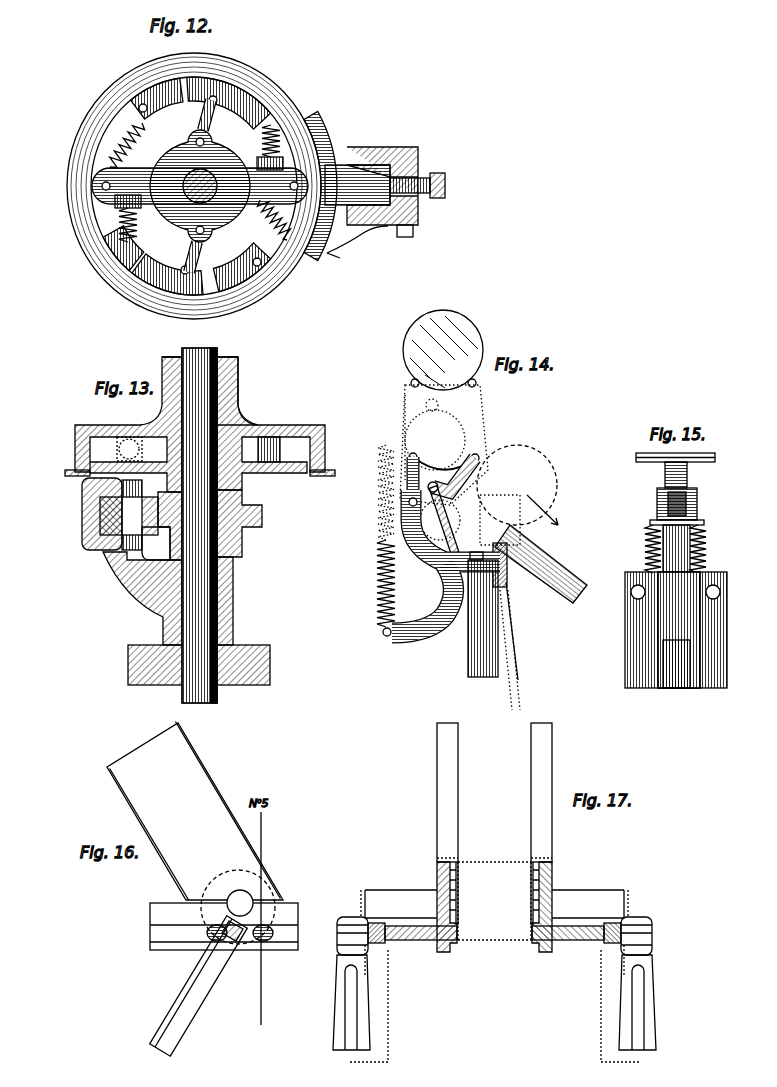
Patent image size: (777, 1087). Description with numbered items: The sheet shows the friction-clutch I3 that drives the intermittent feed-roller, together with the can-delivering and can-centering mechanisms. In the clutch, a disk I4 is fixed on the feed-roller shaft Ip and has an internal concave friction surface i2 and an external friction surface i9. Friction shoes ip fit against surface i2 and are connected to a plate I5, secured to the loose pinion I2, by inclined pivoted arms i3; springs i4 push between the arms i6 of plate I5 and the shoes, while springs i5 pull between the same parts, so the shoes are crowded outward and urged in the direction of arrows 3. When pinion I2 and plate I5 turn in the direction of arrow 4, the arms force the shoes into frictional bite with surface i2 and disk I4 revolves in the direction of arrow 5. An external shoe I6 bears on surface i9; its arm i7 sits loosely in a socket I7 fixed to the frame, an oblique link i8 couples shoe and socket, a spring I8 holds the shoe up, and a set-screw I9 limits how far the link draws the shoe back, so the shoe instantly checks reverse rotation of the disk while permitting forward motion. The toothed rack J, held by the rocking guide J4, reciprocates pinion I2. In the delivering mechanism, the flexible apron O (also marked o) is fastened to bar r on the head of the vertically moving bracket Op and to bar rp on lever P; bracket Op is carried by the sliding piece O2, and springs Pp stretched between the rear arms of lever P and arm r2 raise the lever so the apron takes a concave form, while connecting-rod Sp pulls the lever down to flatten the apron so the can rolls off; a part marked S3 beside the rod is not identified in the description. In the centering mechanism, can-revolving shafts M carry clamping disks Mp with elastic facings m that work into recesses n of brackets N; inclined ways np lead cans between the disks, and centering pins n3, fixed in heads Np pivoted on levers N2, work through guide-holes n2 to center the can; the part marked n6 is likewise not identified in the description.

In FIG. 12, the disk I4 is at (67, 172).
In FIG. 13, the disk I4 is at (272, 430).
In FIG. 12, the friction-surface i9 is at (236, 58).
In FIG. 12, the arrow 5 is at (146, 57).
In FIG. 12, the arrows 3 is at (223, 299).
In FIG. 12, the arrow 4 is at (218, 148).
In FIG. 12, the friction shoes ip is at (216, 283).
In FIG. 12, the internal surface i2 is at (203, 114).
In FIG. 12, the pivoted arms i3 is at (203, 246).
In FIG. 12, the springs i4 is at (278, 142).
In FIG. 12, the springs i5 is at (134, 139).
In FIG. 12, the friction-clutch I3 is at (240, 135).
In FIG. 13, the friction-clutch I3 is at (294, 438).
In FIG. 12, the shaft Ip is at (225, 214).
In FIG. 13, the shaft Ip is at (199, 525).
In FIG. 12, the external friction-shoe I6 is at (200, 186).
In FIG. 12, the arms i6 is at (330, 142).
In FIG. 12, the socket I7 is at (417, 206).
In FIG. 12, the link i8 is at (372, 165).
In FIG. 12, the set-screw I9 is at (446, 186).
In FIG. 12, the arm i7 is at (374, 231).
In FIG. 12, the spring I8 is at (347, 254).
In FIG. 13, the plate I5 is at (168, 484).
In FIG. 13, the toothed rack J is at (81, 508).
In FIG. 13, the rocking guide J4 is at (84, 540).
In FIG. 13, the loose gear-pinion I2 is at (186, 587).
In FIG. 14, the can-catching apron o is at (460, 427).
In FIG. 14, the bar r is at (406, 458).
In FIG. 15, the bar r is at (716, 458).
In FIG. 14, the bar rp is at (479, 458).
In FIG. 14, the lever P is at (438, 487).
In FIG. 15, the lever P is at (688, 477).
In FIG. 14, the connecting-rod Sp is at (452, 548).
In FIG. 14, the inclined bar S3 is at (538, 552).
In FIG. 14, the vertically-moving bracket Op is at (430, 572).
In FIG. 15, the vertically-moving bracket Op is at (676, 630).
In FIG. 14, the vertical sliding piece O2 is at (475, 640).
In FIG. 15, the vertical sliding piece O2 is at (676, 664).
In FIG. 14, the springs Pp is at (378, 584).
In FIG. 15, the springs Pp is at (648, 546).
In FIG. 14, the arm r2 is at (378, 642).
In FIG. 15, the can-catching apron O is at (676, 582).
In FIG. 16, the inclined ways np is at (195, 811).
In FIG. 17, the inclined ways np is at (494, 792).
In FIG. 16, the can-revolving shafts M is at (224, 910).
In FIG. 17, the can-revolving shafts M is at (494, 904).
In FIG. 16, the can-centering pins n3 is at (263, 948).
In FIG. 17, the can-centering pins n3 is at (425, 946).
In FIG. 16, the levers N2 is at (197, 1005).
In FIG. 17, the levers N2 is at (345, 1003).
In FIG. 16, the washer n6 is at (212, 946).
In FIG. 16, the brackets N is at (241, 956).
In FIG. 17, the brackets N is at (441, 876).
In FIG. 17, the circular recesses n is at (446, 902).
In FIG. 17, the can-holding disks Mp is at (492, 881).
In FIG. 17, the facing-pieces m is at (495, 913).
In FIG. 17, the guide-holes n2 is at (458, 945).
In FIG. 17, the heads Np is at (378, 946).